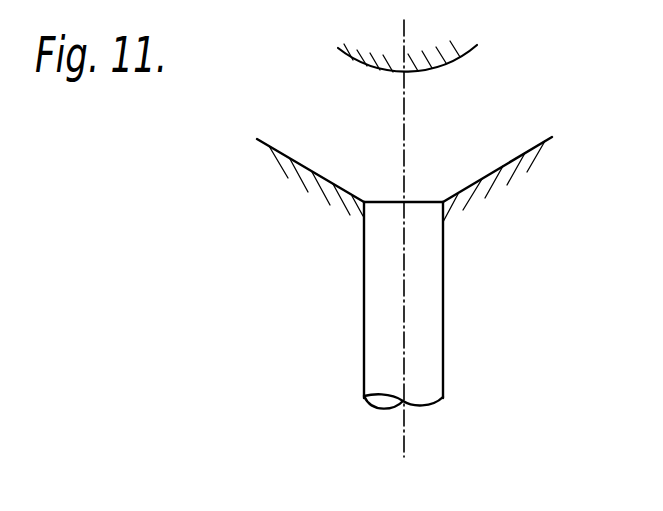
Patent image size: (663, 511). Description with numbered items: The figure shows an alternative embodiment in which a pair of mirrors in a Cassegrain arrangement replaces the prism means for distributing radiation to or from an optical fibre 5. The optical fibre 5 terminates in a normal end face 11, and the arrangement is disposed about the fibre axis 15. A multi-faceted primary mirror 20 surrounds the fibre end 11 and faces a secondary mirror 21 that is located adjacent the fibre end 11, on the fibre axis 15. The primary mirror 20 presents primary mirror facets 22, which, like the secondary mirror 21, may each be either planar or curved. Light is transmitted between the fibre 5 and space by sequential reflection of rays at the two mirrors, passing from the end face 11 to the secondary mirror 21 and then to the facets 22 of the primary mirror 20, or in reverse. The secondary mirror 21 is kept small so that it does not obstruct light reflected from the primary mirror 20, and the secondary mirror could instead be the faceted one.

The optical fibre 5 is at (365, 313).
The end face 11 is at (377, 200).
The fibre axis 15 is at (405, 448).
The primary mirror 20 is at (296, 192).
The secondary mirror 21 is at (466, 55).
The primary mirror facets 22 is at (290, 158).